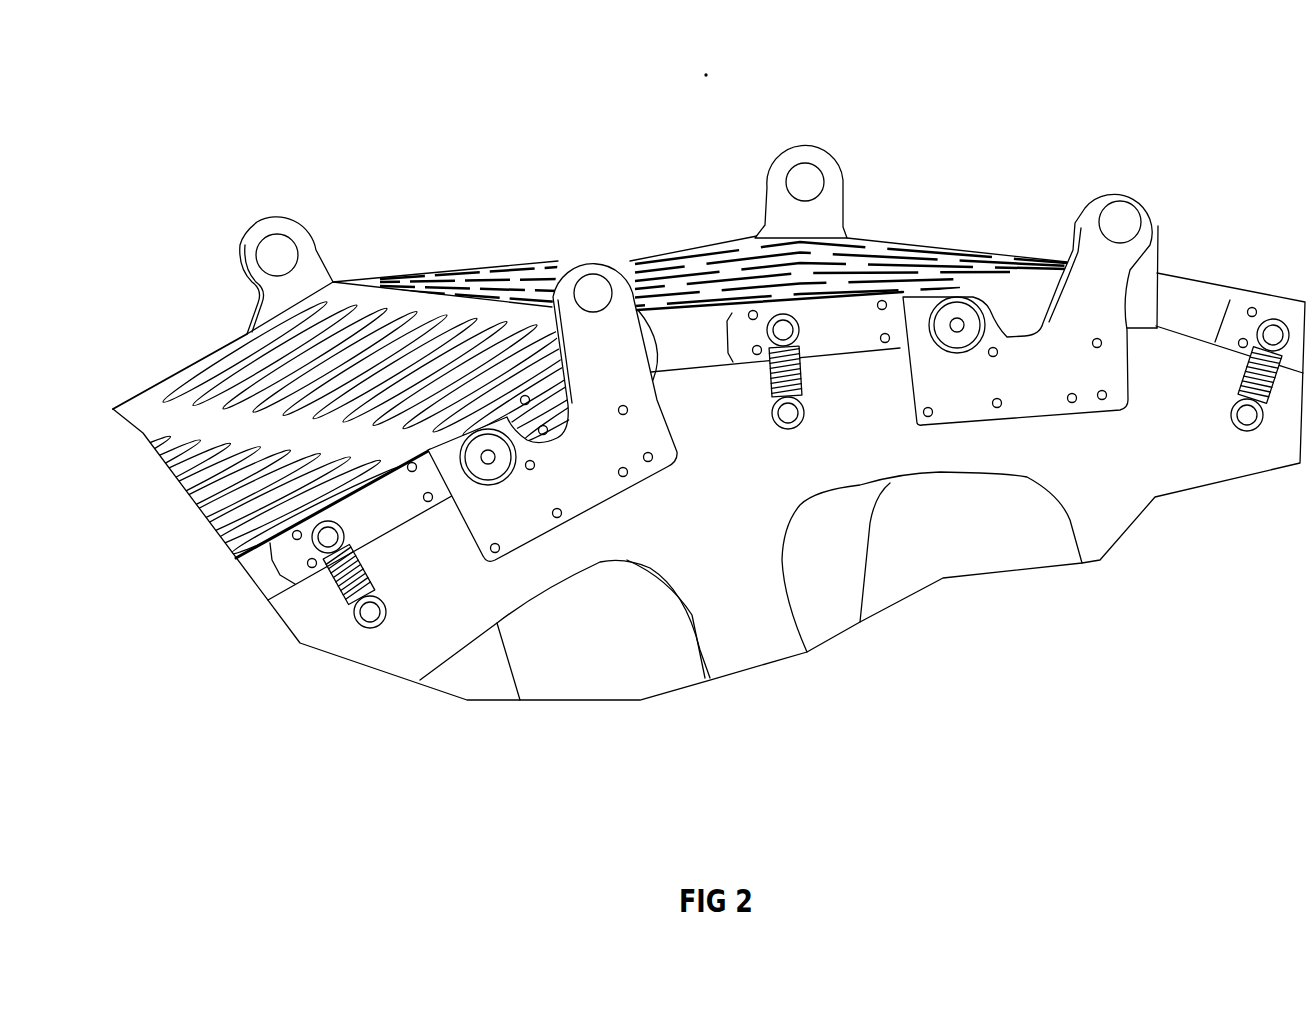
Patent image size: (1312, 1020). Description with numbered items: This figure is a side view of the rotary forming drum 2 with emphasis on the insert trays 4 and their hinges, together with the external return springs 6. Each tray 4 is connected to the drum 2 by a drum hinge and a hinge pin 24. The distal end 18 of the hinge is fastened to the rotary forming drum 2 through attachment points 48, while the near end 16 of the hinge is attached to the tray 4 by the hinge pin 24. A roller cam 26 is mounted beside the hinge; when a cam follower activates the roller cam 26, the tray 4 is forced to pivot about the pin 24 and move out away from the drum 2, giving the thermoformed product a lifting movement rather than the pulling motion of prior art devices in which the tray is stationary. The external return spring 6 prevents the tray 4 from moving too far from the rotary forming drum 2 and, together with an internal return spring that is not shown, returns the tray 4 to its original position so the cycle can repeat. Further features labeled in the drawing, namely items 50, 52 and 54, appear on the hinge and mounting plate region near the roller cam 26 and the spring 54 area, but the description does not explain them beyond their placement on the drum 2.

The rotary forming drum 2 is at (540, 118).
The insert tray 4 is at (937, 240).
The external return spring 6 is at (1237, 378).
The near end 16 is at (1140, 200).
The distal end 18 is at (918, 337).
The hinge pin 24 is at (808, 180).
The roller cam 26 is at (950, 352).
The attachment points 48 is at (1000, 363).
The mounting plate 50 is at (847, 327).
The bracket slot 52 is at (1040, 297).
The spring 54 is at (810, 333).